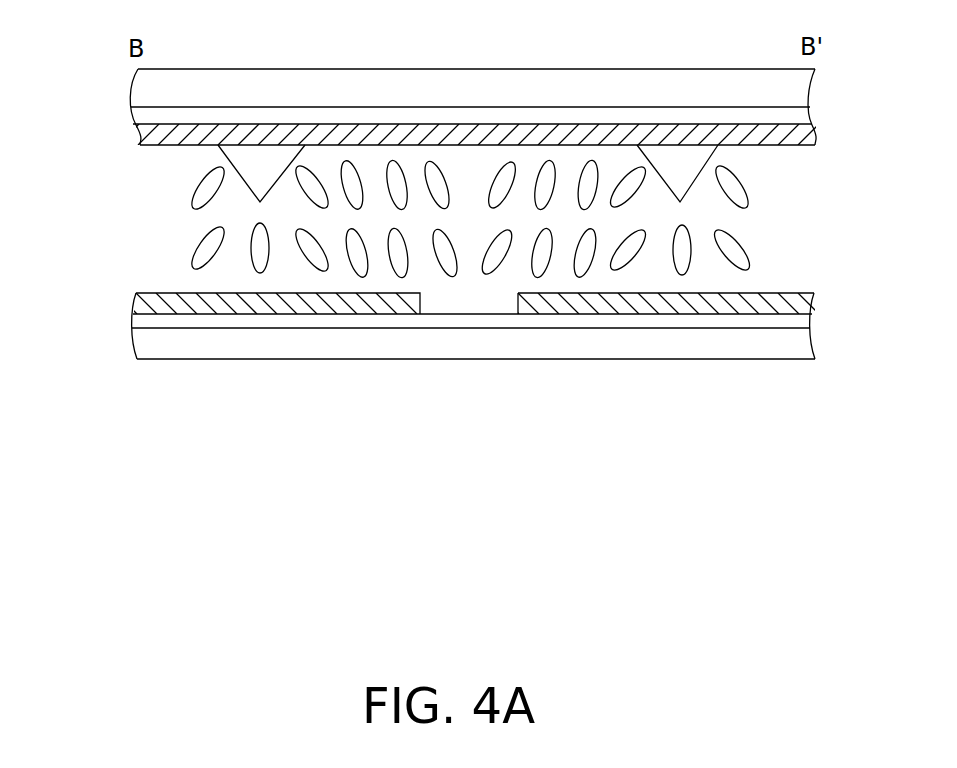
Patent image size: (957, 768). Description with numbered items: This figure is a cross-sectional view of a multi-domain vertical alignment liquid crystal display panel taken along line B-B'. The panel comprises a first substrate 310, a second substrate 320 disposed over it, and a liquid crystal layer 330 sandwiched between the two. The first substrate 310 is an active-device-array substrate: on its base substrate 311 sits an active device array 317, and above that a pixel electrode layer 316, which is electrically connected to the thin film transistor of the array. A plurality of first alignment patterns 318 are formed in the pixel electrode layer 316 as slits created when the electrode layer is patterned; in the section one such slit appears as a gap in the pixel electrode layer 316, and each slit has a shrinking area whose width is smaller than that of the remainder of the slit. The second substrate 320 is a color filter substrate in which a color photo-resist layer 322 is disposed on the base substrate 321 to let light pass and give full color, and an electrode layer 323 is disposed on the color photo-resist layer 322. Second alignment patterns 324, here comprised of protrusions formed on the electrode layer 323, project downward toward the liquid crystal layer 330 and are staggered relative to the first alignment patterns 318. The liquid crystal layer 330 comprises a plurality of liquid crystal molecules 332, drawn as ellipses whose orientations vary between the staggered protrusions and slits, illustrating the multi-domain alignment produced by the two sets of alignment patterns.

The first substrate 310 is at (846, 293).
The substrate 311 is at (140, 345).
The pixel electrode layer 316 is at (135, 305).
The active device array 317 is at (135, 320).
The first alignment pattern 318 is at (508, 299).
The second substrate 320 is at (846, 69).
The substrate 321 is at (143, 85).
The color photo-resist layer 322 is at (140, 112).
The electrode layer 323 is at (140, 137).
The second alignment pattern 324 is at (230, 155).
The liquid crystal layer 330 is at (846, 147).
The liquid crystal molecules 332 is at (207, 248).